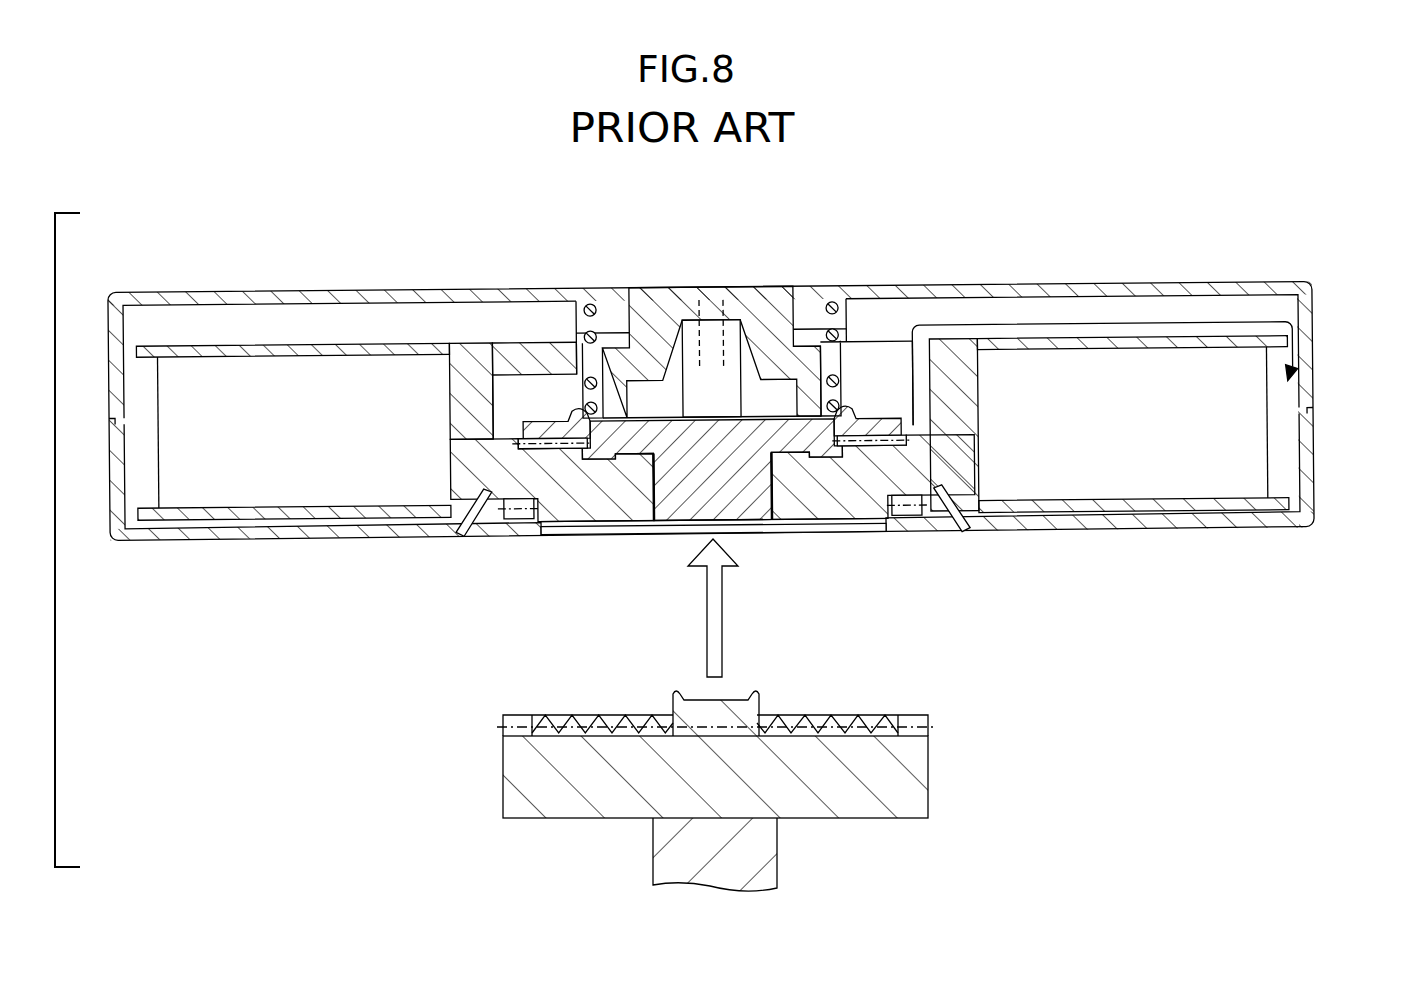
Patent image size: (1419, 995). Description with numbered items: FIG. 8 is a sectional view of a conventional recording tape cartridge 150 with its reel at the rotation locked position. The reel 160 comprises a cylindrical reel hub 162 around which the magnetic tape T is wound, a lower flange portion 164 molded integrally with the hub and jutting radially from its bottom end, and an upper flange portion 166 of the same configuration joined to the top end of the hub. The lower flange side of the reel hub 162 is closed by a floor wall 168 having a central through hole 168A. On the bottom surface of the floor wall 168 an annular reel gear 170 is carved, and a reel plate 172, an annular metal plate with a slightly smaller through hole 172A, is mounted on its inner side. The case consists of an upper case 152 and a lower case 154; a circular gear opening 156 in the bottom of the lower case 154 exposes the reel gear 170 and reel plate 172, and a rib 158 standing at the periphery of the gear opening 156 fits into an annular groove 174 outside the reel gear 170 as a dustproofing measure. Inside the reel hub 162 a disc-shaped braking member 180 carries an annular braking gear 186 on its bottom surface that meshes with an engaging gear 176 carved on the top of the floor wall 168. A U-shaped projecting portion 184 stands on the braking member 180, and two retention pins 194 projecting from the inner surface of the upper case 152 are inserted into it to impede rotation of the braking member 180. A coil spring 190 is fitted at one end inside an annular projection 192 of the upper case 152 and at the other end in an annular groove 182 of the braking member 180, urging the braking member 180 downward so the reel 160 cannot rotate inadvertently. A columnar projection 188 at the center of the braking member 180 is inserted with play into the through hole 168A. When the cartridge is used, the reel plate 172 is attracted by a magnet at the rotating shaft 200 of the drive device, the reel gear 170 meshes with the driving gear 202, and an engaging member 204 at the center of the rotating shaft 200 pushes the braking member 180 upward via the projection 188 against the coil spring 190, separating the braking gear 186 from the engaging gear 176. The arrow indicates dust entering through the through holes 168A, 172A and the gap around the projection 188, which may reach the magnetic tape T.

The recording tape cartridge 150 is at (1070, 206).
The upper case 152 is at (1318, 352).
The lower case 154 is at (1318, 470).
The gear opening 156 is at (945, 533).
The rib 158 is at (500, 492).
The reel 160 is at (292, 345).
The reel hub 162 is at (958, 437).
The lower flange portion 164 is at (1137, 507).
The upper flange portion 166 is at (390, 345).
The floor wall 168 is at (832, 500).
The through hole 168A is at (647, 527).
The reel gear 170 is at (512, 533).
The reel plate 172 is at (515, 512).
The through hole 172A is at (765, 520).
The annular groove 174 is at (960, 488).
The engaging gear 176 is at (523, 434).
The braking member 180 is at (537, 419).
The annular groove 182 is at (583, 395).
The U-shaped projecting portion 184 is at (870, 440).
The braking gear 186 is at (910, 335).
The projection 188 is at (733, 500).
The coil spring 190 is at (597, 303).
The annular projection 192 is at (836, 328).
The retention pins 194 is at (745, 368).
The rotating shaft 200 is at (758, 852).
The driving gear 202 is at (905, 714).
The engaging member 204 is at (700, 712).
The magnetic tape T is at (170, 397).